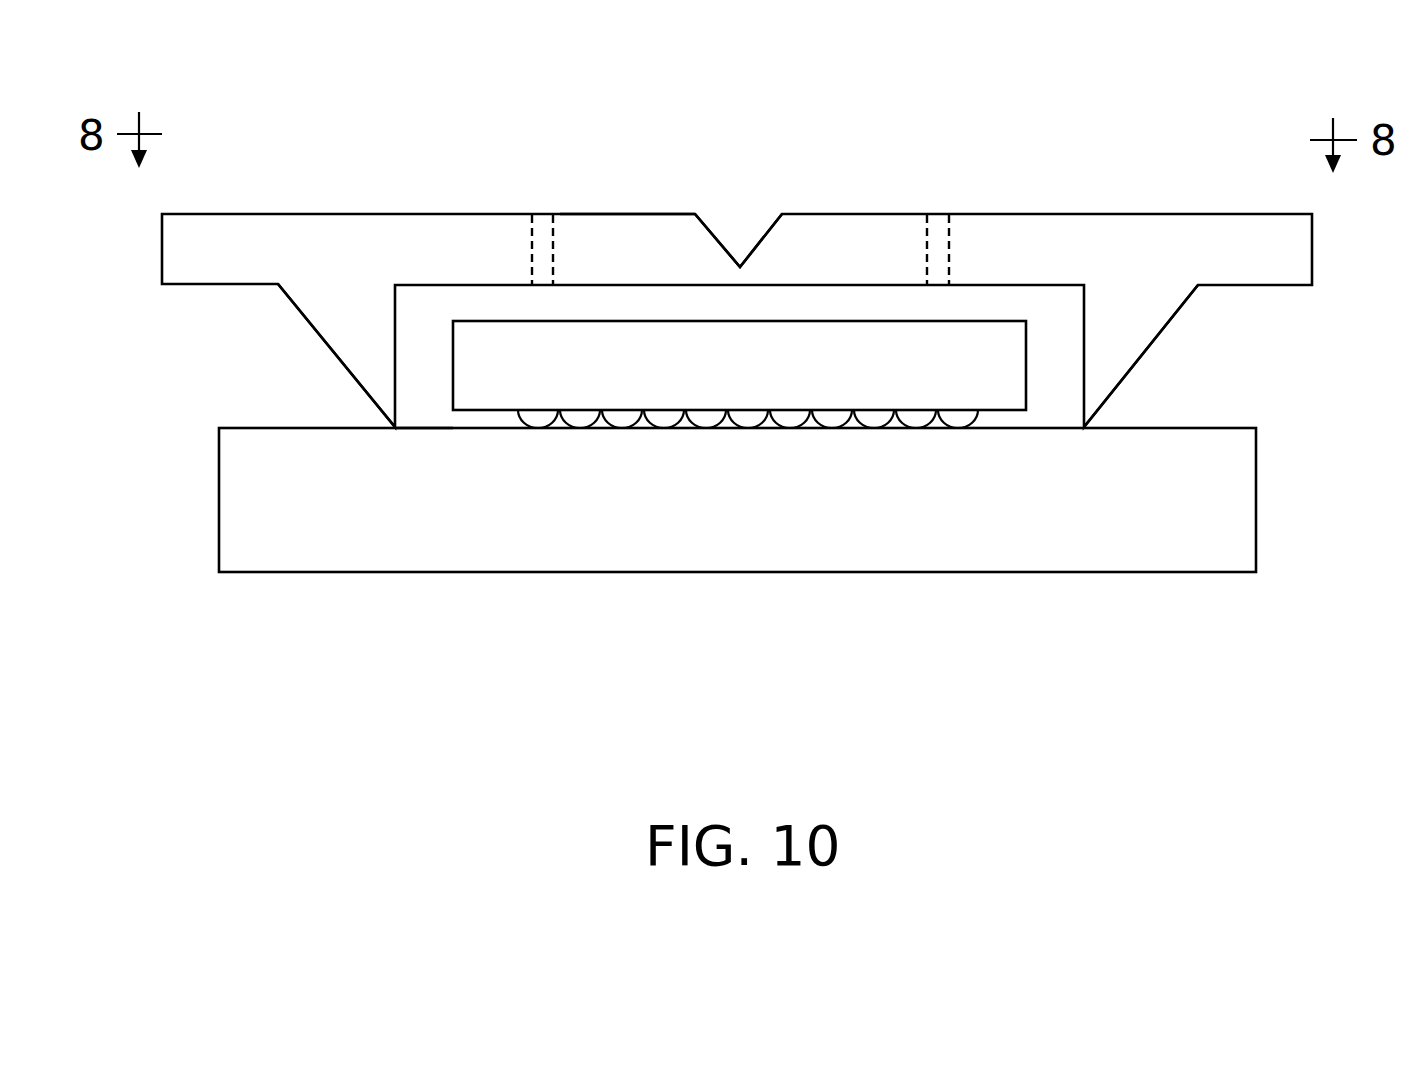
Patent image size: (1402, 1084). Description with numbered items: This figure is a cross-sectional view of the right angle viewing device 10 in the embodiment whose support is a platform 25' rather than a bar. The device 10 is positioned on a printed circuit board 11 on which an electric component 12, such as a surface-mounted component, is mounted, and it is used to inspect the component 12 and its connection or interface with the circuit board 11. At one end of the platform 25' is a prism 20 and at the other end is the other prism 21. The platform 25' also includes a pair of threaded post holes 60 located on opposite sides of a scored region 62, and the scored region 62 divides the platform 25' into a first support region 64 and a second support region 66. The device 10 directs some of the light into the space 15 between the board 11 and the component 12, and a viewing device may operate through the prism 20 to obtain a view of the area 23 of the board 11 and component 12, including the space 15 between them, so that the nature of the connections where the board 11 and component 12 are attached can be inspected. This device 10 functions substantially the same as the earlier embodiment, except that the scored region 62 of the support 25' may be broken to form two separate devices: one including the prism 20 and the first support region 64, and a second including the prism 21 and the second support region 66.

The right angle viewing device 10 is at (804, 96).
The platform 25' is at (737, 274).
The threaded post holes 60 is at (505, 240).
The scored region 62 is at (740, 205).
The first support region 64 is at (618, 214).
The second support region 66 is at (977, 214).
The prism 20 is at (347, 330).
The prism 21 is at (1118, 333).
The printed circuit board 11 is at (785, 573).
The electric component 12 is at (1027, 375).
The space 15 is at (487, 418).
The area 23 is at (432, 415).